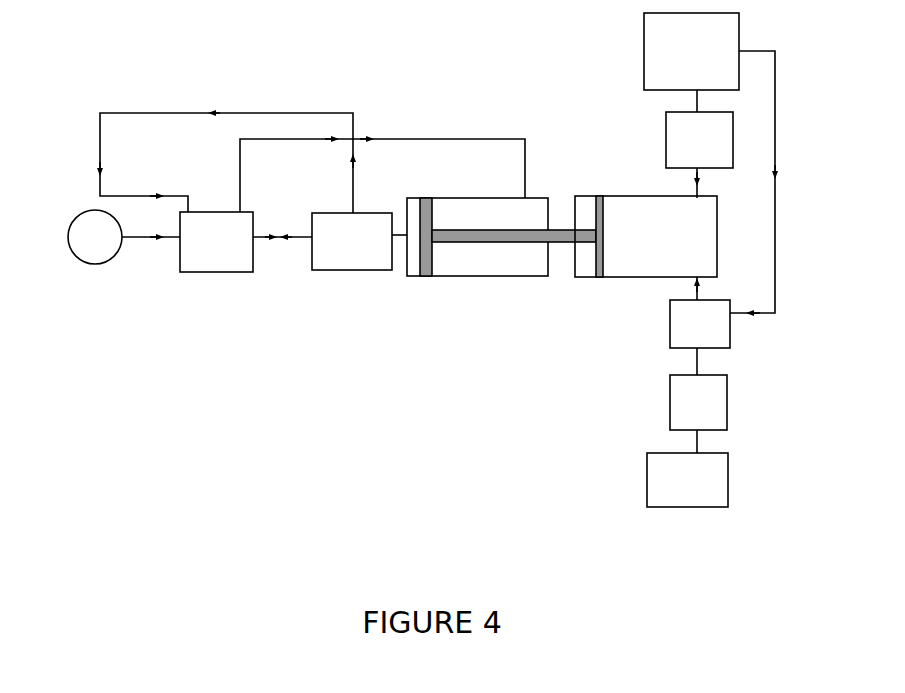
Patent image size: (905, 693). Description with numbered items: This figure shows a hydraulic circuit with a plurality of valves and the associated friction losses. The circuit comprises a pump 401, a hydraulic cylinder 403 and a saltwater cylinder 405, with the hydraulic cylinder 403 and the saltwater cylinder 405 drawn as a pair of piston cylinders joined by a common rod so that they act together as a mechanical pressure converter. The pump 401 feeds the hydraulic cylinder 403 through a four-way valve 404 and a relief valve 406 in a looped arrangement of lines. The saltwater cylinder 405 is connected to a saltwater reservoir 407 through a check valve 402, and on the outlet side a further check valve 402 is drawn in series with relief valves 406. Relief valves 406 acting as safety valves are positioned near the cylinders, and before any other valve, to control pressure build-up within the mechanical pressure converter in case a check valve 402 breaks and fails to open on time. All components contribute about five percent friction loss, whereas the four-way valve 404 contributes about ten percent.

The pump 401 is at (95, 237).
The check valve 402 is at (699, 271).
The hydraulic cylinder 403 is at (501, 237).
The 4-way valve 404 is at (216, 242).
The saltwater cylinder 405 is at (646, 236).
The relief valve 406 is at (521, 360).
The saltwater reservoir 407 is at (691, 51).